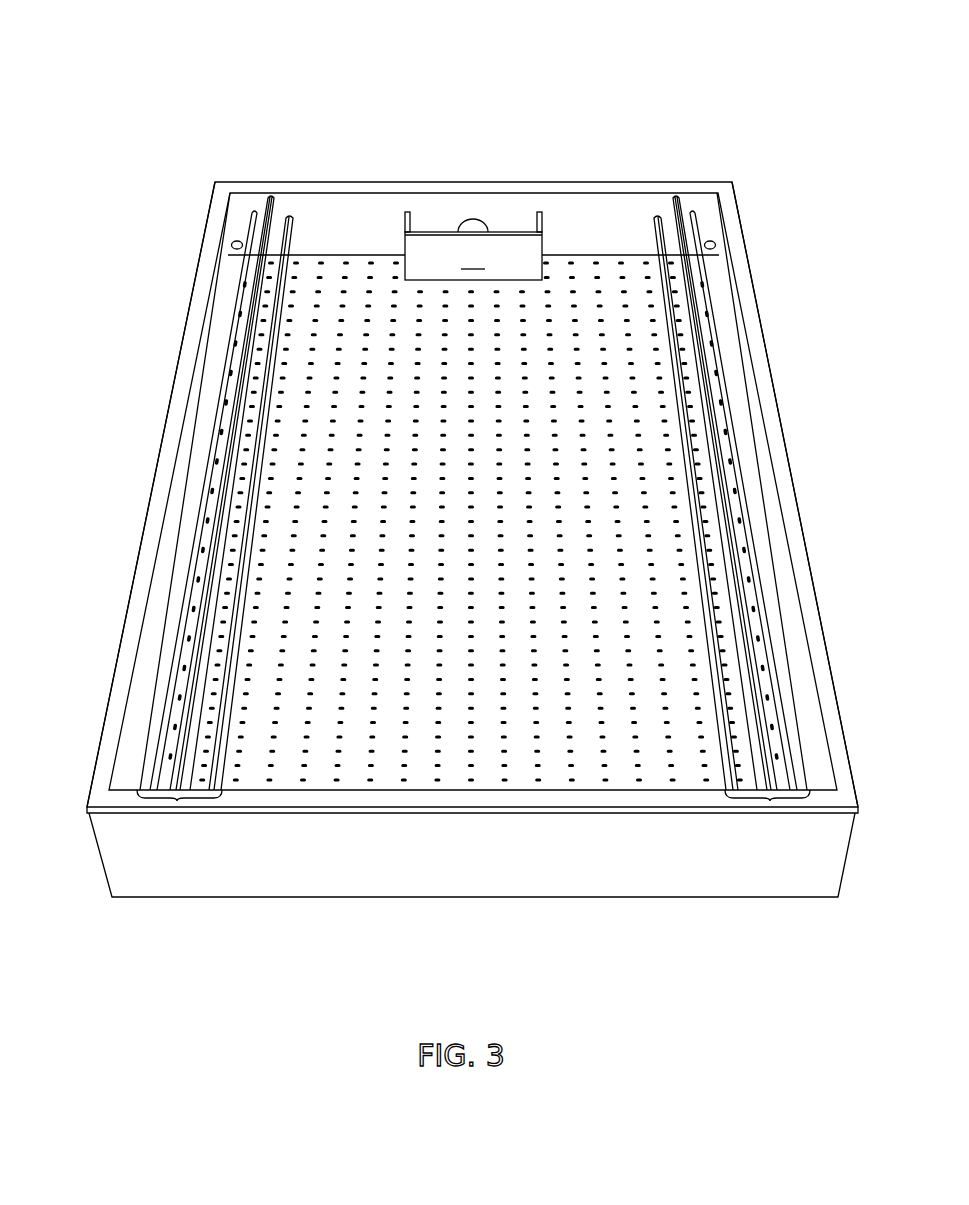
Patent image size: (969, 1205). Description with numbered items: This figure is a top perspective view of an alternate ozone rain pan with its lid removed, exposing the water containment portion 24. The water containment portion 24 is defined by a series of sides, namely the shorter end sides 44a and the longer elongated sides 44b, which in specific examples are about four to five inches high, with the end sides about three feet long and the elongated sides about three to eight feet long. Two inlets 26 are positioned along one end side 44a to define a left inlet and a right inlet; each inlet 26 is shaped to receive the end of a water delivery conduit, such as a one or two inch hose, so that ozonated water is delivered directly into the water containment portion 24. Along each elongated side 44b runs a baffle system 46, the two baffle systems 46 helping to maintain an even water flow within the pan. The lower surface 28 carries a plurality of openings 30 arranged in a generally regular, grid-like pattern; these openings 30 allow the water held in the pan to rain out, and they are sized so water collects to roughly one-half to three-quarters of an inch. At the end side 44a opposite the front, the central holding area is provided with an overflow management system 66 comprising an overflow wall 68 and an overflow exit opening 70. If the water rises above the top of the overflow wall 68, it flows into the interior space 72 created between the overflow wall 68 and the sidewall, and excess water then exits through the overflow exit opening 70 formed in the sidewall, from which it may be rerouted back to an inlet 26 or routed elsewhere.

The water containment portion 24 is at (647, 162).
The inlet 26 is at (232, 243).
The lower surface 28 is at (600, 402).
The openings 30 is at (563, 493).
The end sides 44a is at (347, 207).
The elongated sides 44b is at (773, 422).
The baffle system 46 is at (177, 801).
The overflow management system 66 is at (390, 121).
The overflow wall 68 is at (473, 256).
The overflow exit opening 70 is at (478, 222).
The interior space 72 is at (430, 216).